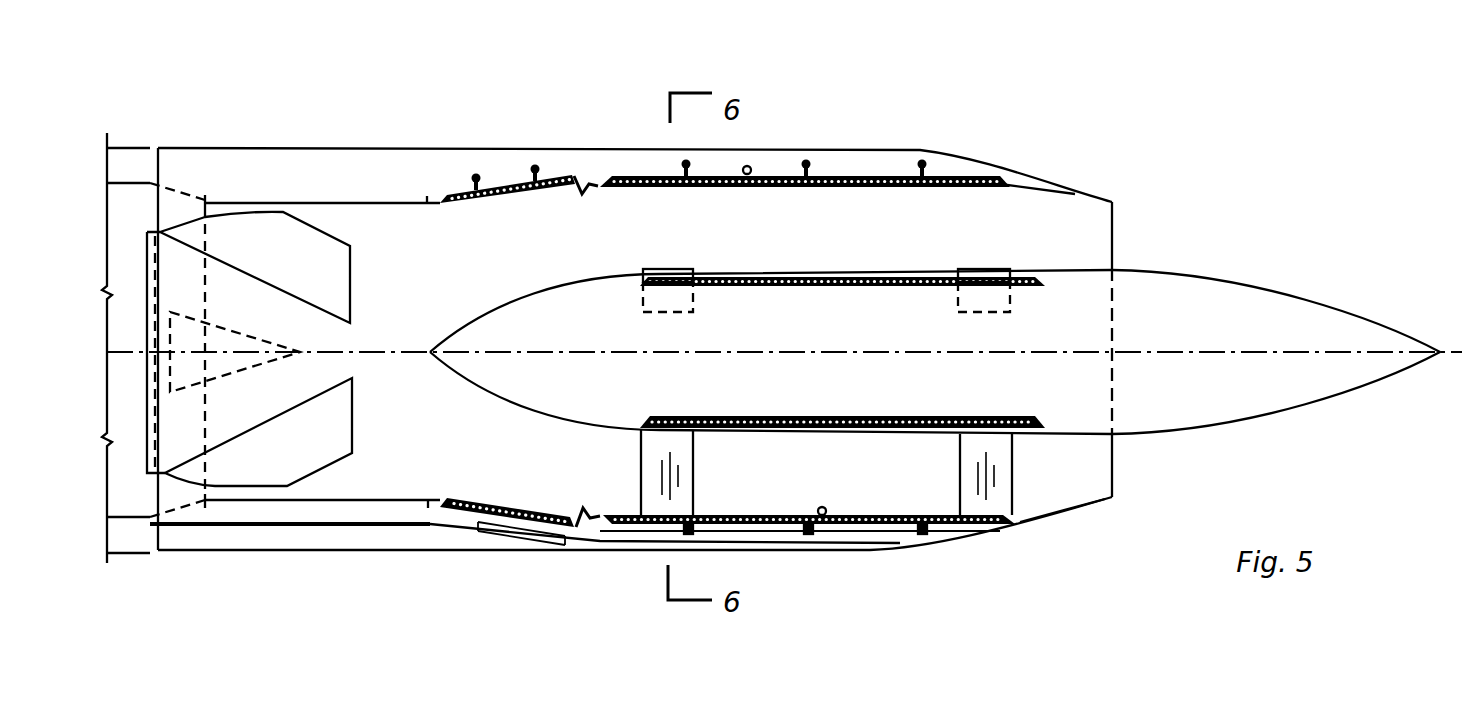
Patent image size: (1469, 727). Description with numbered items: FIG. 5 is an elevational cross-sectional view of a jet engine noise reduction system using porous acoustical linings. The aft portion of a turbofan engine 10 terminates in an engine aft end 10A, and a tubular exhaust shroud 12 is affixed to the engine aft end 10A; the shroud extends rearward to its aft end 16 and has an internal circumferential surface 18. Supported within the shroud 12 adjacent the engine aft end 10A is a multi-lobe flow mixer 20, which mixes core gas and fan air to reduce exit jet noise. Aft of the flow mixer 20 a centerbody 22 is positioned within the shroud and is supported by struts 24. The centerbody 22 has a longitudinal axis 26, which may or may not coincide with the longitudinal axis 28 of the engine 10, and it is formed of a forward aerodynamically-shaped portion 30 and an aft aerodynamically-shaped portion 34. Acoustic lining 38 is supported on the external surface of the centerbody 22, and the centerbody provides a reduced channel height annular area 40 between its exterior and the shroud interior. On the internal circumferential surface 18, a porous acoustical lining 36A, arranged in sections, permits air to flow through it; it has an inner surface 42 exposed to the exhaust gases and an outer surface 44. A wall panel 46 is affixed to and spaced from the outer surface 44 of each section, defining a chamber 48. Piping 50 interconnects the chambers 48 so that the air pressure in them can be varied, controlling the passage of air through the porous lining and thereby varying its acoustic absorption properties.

The turbofan engine 10 is at (147, 140).
The engine aft end 10A is at (160, 162).
The exhaust shroud 12 is at (888, 150).
The aft end 16 is at (1112, 215).
The internal circumferential surface 18 is at (578, 180).
The multi-lobe flow mixer 20 is at (272, 222).
The centerbody 22 is at (815, 440).
The struts 24 is at (990, 268).
The longitudinal axis 26 is at (830, 350).
The longitudinal axis 28 is at (130, 352).
The forward aerodynamically-shaped portion 30 is at (520, 308).
The aft aerodynamically-shaped portion 34 is at (1265, 297).
The porous acoustical lining 36A is at (893, 186).
The acoustic lining 38 is at (828, 280).
The reduced channel height annular area 40 is at (923, 242).
The inner surface 42 is at (812, 526).
The outer surface 44 is at (738, 185).
The wall panel 46 is at (510, 183).
The chamber 48 is at (962, 177).
The piping 50 is at (373, 525).